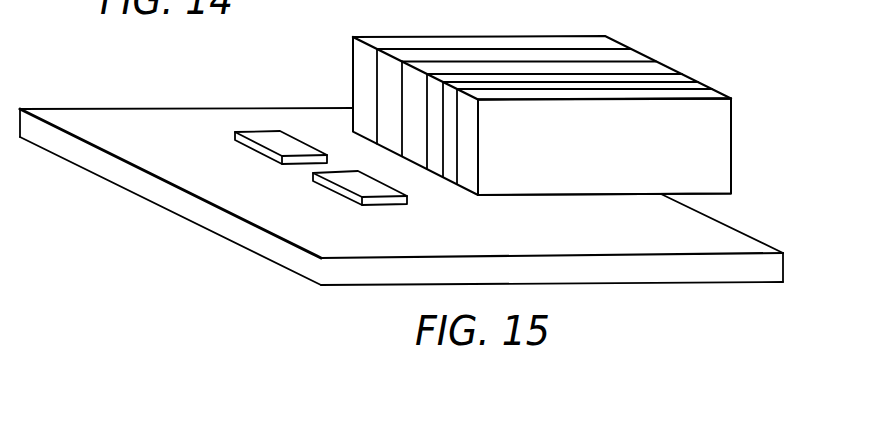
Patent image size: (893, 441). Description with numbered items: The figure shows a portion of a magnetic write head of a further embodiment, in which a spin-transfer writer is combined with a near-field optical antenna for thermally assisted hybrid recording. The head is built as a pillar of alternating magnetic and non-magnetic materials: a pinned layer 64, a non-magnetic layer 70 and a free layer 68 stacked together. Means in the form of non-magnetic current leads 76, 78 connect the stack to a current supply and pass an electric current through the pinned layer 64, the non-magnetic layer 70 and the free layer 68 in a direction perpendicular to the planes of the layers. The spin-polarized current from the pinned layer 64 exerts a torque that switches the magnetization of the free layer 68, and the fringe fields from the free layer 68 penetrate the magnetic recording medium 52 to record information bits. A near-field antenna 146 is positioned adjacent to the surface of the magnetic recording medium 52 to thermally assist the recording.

The magnetic recording medium 52 is at (167, 196).
The near-field antenna 146 is at (351, 177).
The pinned layer 64 is at (573, 97).
The free layer 68 is at (607, 55).
The non-magnetic layer 70 is at (650, 65).
The current lead 76 is at (717, 174).
The current lead 78 is at (502, 40).